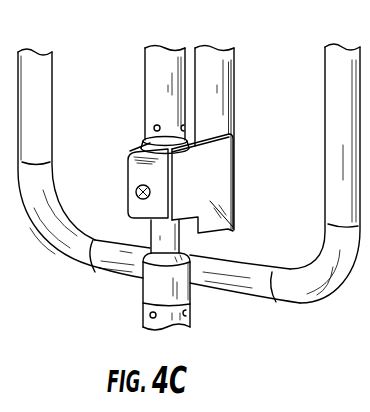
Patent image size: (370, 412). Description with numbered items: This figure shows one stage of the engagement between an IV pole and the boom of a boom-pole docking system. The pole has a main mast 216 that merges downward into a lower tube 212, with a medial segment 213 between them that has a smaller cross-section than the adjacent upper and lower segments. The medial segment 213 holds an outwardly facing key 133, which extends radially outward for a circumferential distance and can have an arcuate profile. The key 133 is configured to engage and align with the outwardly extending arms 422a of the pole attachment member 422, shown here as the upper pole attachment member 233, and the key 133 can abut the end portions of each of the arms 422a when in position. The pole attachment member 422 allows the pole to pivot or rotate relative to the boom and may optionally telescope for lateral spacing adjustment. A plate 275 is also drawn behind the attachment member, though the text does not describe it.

The main mast 216 is at (167, 68).
The support plate 275 is at (227, 86).
The pole attachment member 422 is at (203, 173).
The outwardly extending arms 422a is at (136, 148).
The key 133 is at (128, 171).
The medial segment 213 is at (150, 228).
The lower tube 212 is at (188, 314).
The upper pole attachment member 233 is at (223, 181).